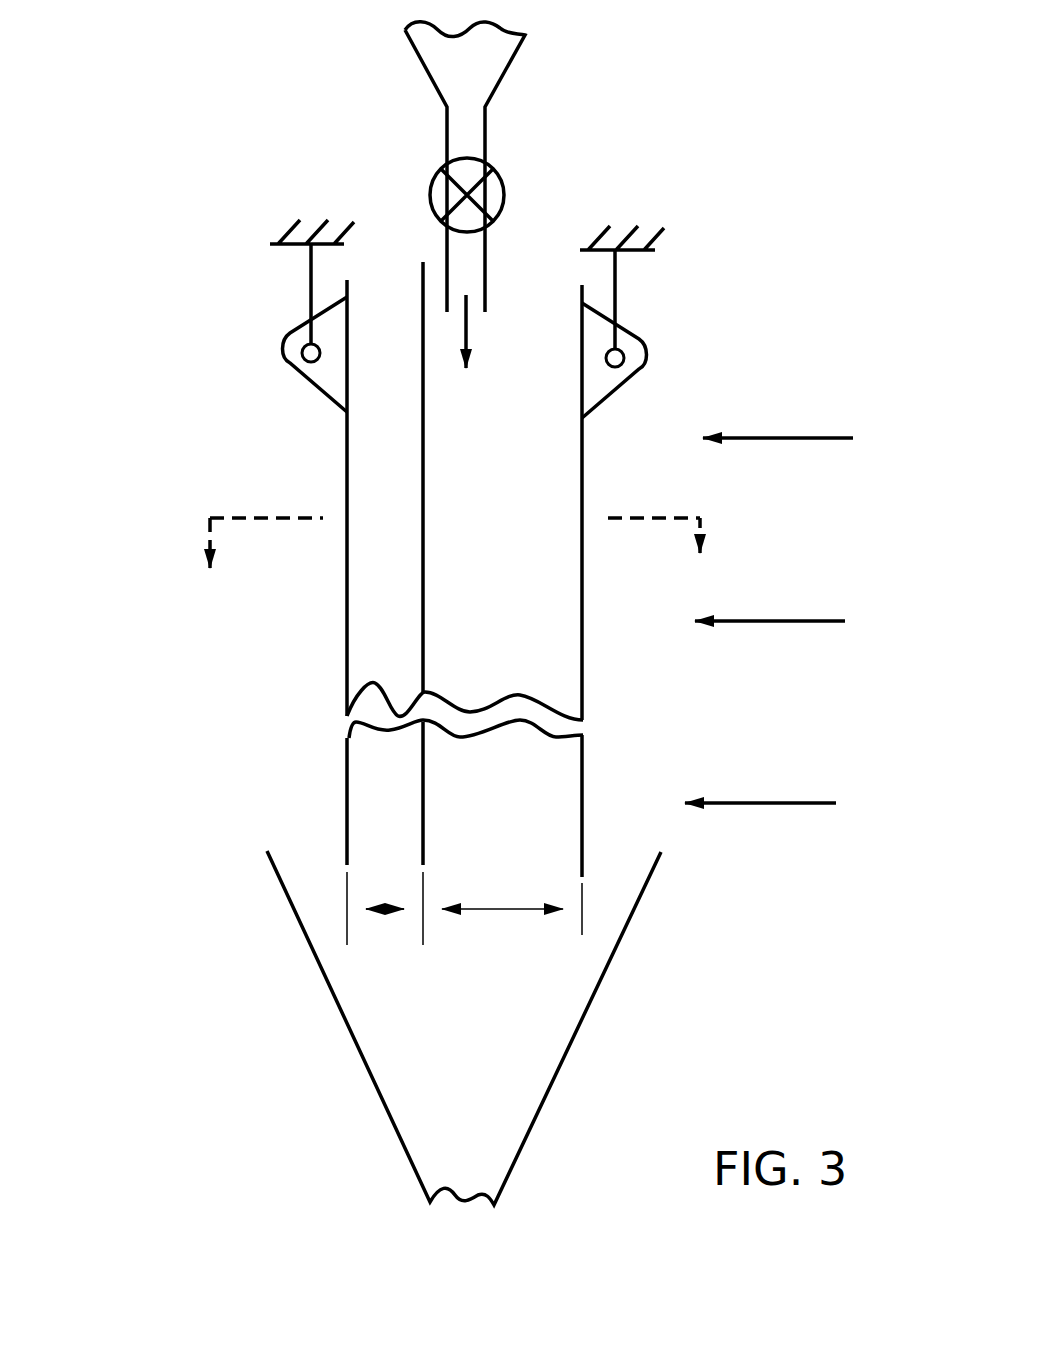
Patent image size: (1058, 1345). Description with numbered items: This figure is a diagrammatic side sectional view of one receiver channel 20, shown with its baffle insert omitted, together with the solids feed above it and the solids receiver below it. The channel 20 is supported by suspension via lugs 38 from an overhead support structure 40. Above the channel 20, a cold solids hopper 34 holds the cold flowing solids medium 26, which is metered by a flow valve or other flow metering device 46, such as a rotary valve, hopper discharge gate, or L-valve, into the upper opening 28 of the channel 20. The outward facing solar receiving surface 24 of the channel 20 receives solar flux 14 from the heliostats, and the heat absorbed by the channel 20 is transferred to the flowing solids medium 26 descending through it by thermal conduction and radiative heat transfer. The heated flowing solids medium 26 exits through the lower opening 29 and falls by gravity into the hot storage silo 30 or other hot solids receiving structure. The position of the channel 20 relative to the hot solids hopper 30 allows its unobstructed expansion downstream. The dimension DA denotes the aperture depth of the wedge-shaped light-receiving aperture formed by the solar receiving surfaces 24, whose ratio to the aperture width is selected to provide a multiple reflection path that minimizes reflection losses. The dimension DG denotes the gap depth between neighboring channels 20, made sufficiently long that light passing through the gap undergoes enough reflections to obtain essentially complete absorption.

The solar flux 14 is at (757, 621).
The channel 20 is at (383, 573).
The solar receiving surface 24 is at (530, 594).
The flowing solids medium 26 is at (468, 348).
The upper opening 28 is at (385, 288).
The lower opening 29 is at (383, 978).
The hot storage silo 30 is at (562, 1012).
The cold solids hopper 34 is at (478, 78).
The lug 38 is at (294, 345).
The overhead support structure 40 is at (637, 248).
The flow metering device 46 is at (490, 180).
The aperture depth DA is at (485, 909).
The gap depth DG is at (388, 910).